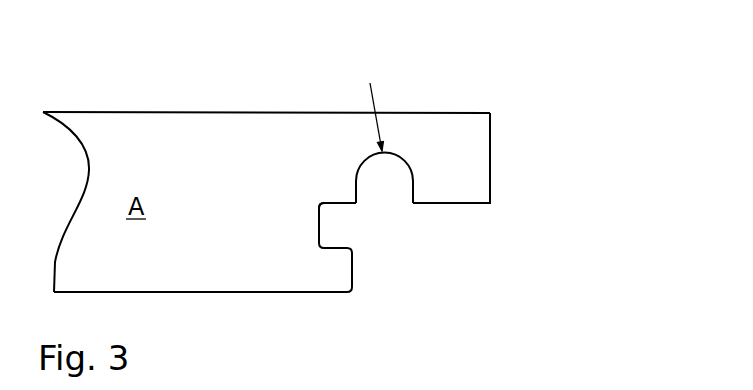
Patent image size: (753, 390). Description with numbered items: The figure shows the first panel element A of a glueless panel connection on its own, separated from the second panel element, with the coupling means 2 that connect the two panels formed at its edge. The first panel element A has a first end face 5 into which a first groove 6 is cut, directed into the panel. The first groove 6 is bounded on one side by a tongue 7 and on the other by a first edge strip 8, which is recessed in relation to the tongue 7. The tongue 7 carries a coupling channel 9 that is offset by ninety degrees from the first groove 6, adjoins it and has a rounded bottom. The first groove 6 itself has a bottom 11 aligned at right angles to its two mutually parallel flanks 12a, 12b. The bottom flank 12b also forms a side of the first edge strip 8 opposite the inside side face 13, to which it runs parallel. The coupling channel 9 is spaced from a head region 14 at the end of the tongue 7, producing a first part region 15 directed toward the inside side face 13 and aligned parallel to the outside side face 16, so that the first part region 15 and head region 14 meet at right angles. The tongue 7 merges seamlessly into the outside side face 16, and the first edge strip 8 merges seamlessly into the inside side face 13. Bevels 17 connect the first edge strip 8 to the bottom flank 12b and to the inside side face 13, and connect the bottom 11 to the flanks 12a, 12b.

The coupling means 2 is at (547, 245).
The first end face 5 is at (566, 188).
The first groove 6 is at (340, 230).
The tongue 7 is at (476, 133).
The first edge strip 8 is at (344, 273).
The coupling channel 9 is at (390, 180).
The bottom 11 is at (316, 225).
The flank 12a is at (339, 202).
The bottom flank 12b is at (353, 248).
The inside side face 13 is at (172, 377).
The head region 14 is at (492, 152).
The first part region 15 is at (451, 205).
The outside side face 16 is at (188, 110).
The bevels 17 is at (324, 208).